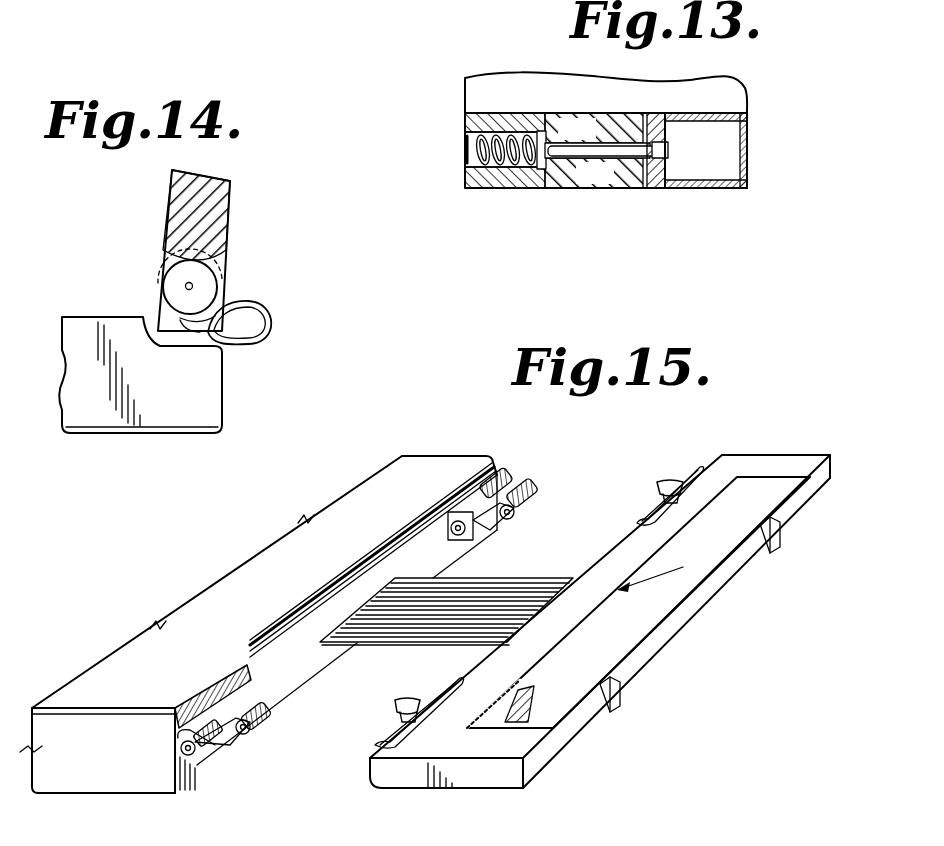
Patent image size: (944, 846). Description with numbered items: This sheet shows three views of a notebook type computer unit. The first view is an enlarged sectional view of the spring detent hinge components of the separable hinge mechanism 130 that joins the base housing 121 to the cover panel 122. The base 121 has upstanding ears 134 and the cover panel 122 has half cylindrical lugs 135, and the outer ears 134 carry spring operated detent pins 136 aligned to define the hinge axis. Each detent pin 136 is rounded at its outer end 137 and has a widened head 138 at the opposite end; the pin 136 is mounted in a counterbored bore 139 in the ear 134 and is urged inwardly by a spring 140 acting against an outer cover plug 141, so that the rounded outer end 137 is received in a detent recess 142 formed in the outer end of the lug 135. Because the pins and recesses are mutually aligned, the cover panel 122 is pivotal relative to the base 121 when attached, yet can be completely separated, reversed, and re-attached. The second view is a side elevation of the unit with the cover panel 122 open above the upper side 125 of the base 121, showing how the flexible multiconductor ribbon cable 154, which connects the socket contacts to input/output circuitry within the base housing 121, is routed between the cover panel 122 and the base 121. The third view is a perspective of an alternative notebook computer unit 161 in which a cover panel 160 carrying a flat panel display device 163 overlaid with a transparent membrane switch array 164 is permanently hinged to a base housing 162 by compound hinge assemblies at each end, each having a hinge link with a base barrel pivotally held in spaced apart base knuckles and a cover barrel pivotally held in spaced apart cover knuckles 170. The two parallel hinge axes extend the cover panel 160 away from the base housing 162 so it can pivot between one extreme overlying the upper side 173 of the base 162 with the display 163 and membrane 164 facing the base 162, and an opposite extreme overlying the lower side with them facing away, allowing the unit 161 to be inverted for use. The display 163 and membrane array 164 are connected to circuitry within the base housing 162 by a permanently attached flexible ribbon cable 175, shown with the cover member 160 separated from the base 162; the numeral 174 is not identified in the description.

In FIG. 13, the base housing 121 is at (472, 86).
In FIG. 14, the base housing 121 is at (76, 372).
In FIG. 13, the cover panel 122 is at (725, 192).
In FIG. 14, the cover panel 122 is at (218, 197).
In FIG. 14, the upper side 125 is at (70, 316).
In FIG. 13, the separable hinge mechanism 130 is at (672, 146).
In FIG. 14, the upstanding ears 134 is at (158, 256).
In FIG. 14, the half cylindrical lugs 135 is at (221, 259).
In FIG. 13, the spring operated detent pins 136 is at (622, 158).
In FIG. 13, the rounded outer ends 137 is at (669, 157).
In FIG. 13, the widened heads 138 is at (536, 132).
In FIG. 13, the counterbored bores 139 is at (601, 150).
In FIG. 13, the springs 140 is at (522, 188).
In FIG. 13, the outer cover plugs 141 is at (466, 143).
In FIG. 14, the detent recesses 142 is at (185, 287).
In FIG. 14, the flexible multiconductor ribbon cable 154 is at (280, 323).
In FIG. 15, the cover panel 160 is at (745, 463).
In FIG. 15, the notebook computer unit 161 is at (582, 452).
In FIG. 15, the base housing 162 is at (384, 474).
In FIG. 15, the flat panel display device 163 is at (525, 700).
In FIG. 15, the transparent membrane switch array 164 is at (674, 594).
In FIG. 15, the cover knuckles 170 is at (300, 714).
In FIG. 15, the upper side 173 is at (200, 598).
In FIG. 15, the channel bottom wall 174 is at (98, 794).
In FIG. 15, the flexible multiconductor ribbon cable 175 is at (498, 584).